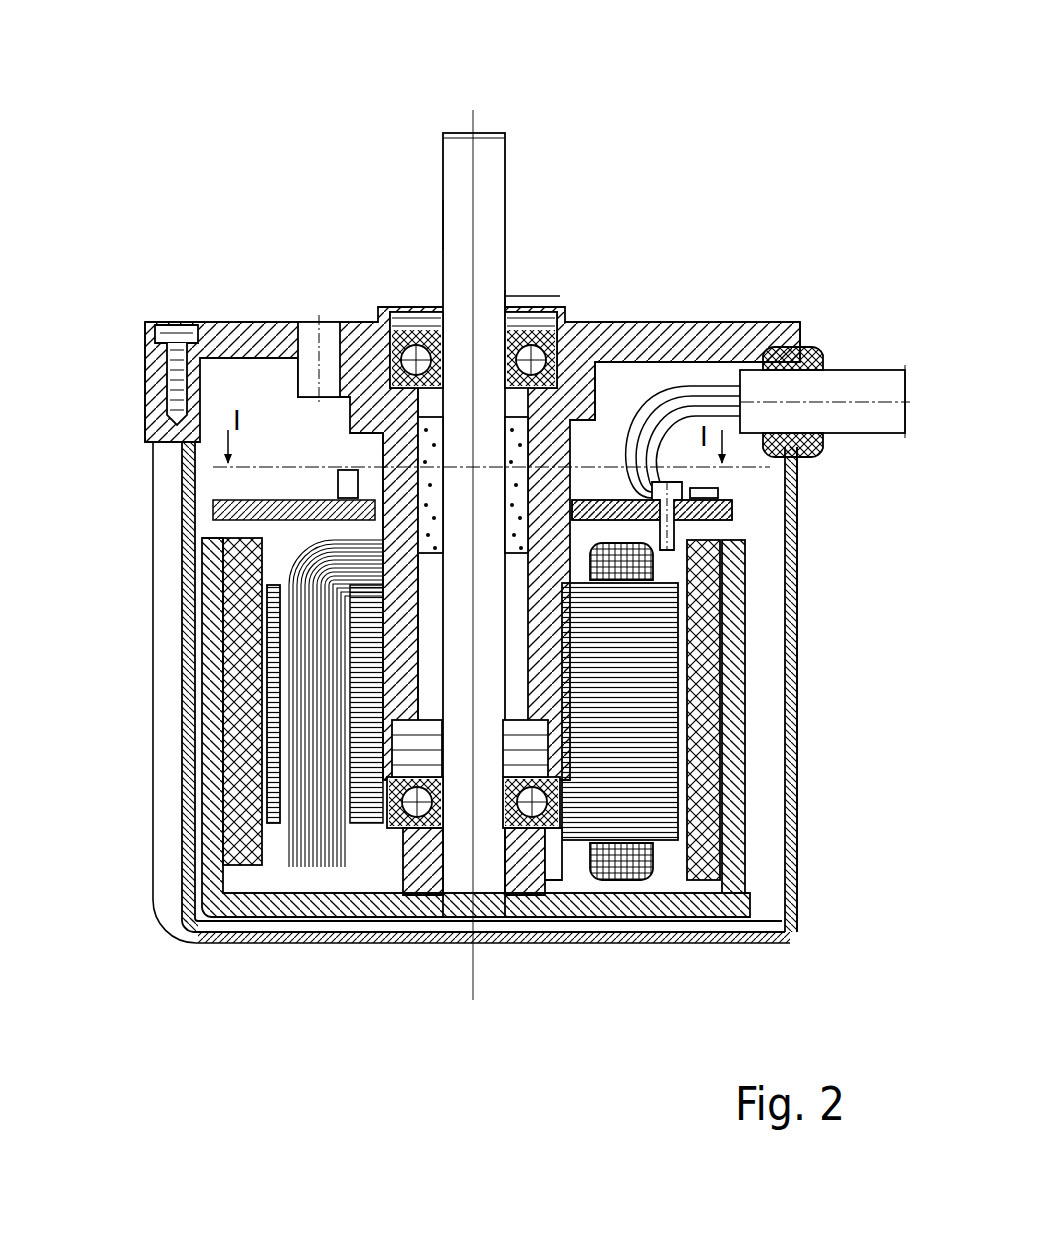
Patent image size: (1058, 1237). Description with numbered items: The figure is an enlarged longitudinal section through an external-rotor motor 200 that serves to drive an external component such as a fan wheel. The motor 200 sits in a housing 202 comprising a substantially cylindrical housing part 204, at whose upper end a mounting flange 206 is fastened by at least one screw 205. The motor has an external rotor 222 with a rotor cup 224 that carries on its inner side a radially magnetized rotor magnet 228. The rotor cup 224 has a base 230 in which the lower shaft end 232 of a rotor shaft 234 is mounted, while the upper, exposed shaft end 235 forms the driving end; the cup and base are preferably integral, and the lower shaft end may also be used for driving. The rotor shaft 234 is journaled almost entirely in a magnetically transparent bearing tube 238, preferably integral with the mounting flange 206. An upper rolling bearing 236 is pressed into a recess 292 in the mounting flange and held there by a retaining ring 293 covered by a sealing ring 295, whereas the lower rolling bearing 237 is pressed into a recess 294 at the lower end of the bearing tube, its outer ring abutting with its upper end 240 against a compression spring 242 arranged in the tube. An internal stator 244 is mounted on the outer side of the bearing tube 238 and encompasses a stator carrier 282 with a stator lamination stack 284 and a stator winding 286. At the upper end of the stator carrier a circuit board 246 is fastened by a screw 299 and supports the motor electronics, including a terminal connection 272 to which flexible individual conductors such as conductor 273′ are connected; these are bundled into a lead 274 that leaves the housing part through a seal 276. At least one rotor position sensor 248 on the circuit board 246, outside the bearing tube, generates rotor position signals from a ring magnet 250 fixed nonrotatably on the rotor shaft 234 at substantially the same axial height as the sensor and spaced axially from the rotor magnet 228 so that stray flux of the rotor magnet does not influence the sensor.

The external-rotor motor 200 is at (722, 66).
The housing 202 is at (162, 316).
The housing part 204 is at (237, 940).
The screw 205 is at (185, 390).
The mounting flange 206 is at (225, 322).
The external rotor 222 is at (742, 889).
The rotor cup 224 is at (690, 917).
The rotor magnet 228 is at (735, 768).
The base 230 is at (445, 900).
The lower shaft end 232 is at (490, 905).
The rotor shaft 234 is at (441, 224).
The upper exposed shaft end 235 is at (495, 172).
The upper rolling bearing 236 is at (598, 340).
The lower rolling bearing 237 is at (410, 833).
The bearing tube 238 is at (348, 408).
The upper end 240 is at (495, 750).
The compression spring 242 is at (430, 743).
The internal stator 244 is at (286, 851).
The circuit board 246 is at (223, 482).
The rotor position sensor 248 is at (340, 470).
The ring magnet 250 is at (633, 673).
The terminal connection 272 is at (703, 478).
The flexible individual conductor 273′ is at (688, 386).
The lead 274 is at (833, 385).
The seal 276 is at (818, 452).
The stator carrier 282 is at (660, 577).
The stator lamination stack 284 is at (712, 697).
The stator winding 286 is at (310, 795).
The recess 292 is at (540, 296).
The retaining ring 293 is at (425, 308).
The recess 294 is at (553, 830).
The sealing ring 295 is at (507, 300).
The screw 299 is at (684, 530).